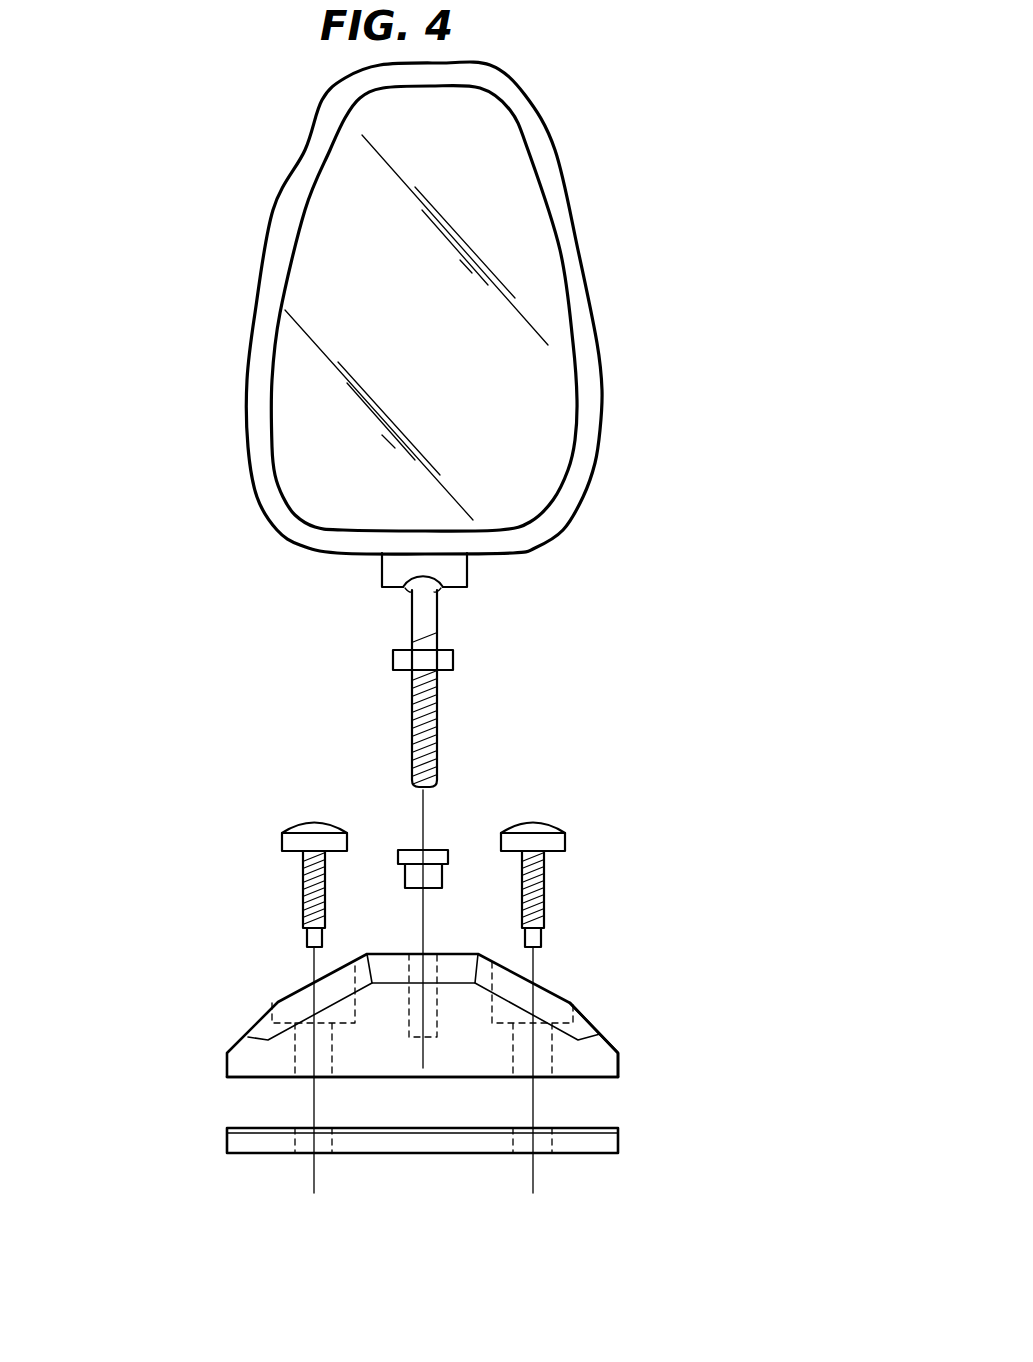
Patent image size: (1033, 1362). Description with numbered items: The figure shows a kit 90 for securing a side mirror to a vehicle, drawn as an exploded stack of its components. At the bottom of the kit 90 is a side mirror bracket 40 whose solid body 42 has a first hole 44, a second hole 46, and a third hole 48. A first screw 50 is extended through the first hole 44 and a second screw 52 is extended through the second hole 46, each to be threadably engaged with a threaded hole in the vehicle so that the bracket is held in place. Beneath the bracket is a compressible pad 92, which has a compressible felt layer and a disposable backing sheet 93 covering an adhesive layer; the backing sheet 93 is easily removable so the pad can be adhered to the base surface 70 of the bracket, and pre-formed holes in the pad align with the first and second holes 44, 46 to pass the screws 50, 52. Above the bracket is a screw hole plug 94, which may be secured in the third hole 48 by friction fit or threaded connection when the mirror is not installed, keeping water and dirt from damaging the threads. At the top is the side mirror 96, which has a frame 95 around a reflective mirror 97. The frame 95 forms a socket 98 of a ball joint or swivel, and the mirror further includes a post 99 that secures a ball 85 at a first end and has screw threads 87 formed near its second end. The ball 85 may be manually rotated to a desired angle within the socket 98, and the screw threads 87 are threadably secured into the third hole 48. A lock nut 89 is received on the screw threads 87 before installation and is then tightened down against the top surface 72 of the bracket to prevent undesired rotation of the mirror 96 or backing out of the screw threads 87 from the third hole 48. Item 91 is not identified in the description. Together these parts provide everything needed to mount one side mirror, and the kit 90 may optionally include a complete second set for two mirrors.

The kit 90 is at (713, 146).
The frame 95 is at (551, 168).
The side mirror 96 is at (272, 208).
The reflective mirror 97 is at (547, 327).
The socket 98 is at (453, 568).
The ball 85 is at (410, 600).
The post 99 is at (437, 622).
The lock nut 89 is at (393, 658).
The screw threads 87 is at (412, 730).
The first screw 50 is at (298, 823).
The second screw 52 is at (527, 823).
The screw hole plug 94 is at (413, 850).
The third hole 48 is at (437, 931).
The top surface 72 is at (385, 954).
The first hole 44 is at (284, 973).
The second hole 46 is at (566, 979).
The side mirror bracket 40 is at (204, 1029).
The solid body 42 is at (610, 1038).
The base surface 70 is at (443, 1077).
The disposable backing sheet 93 is at (590, 1127).
The mounting pad 91 is at (622, 1140).
The compressible pad 92 is at (204, 1143).